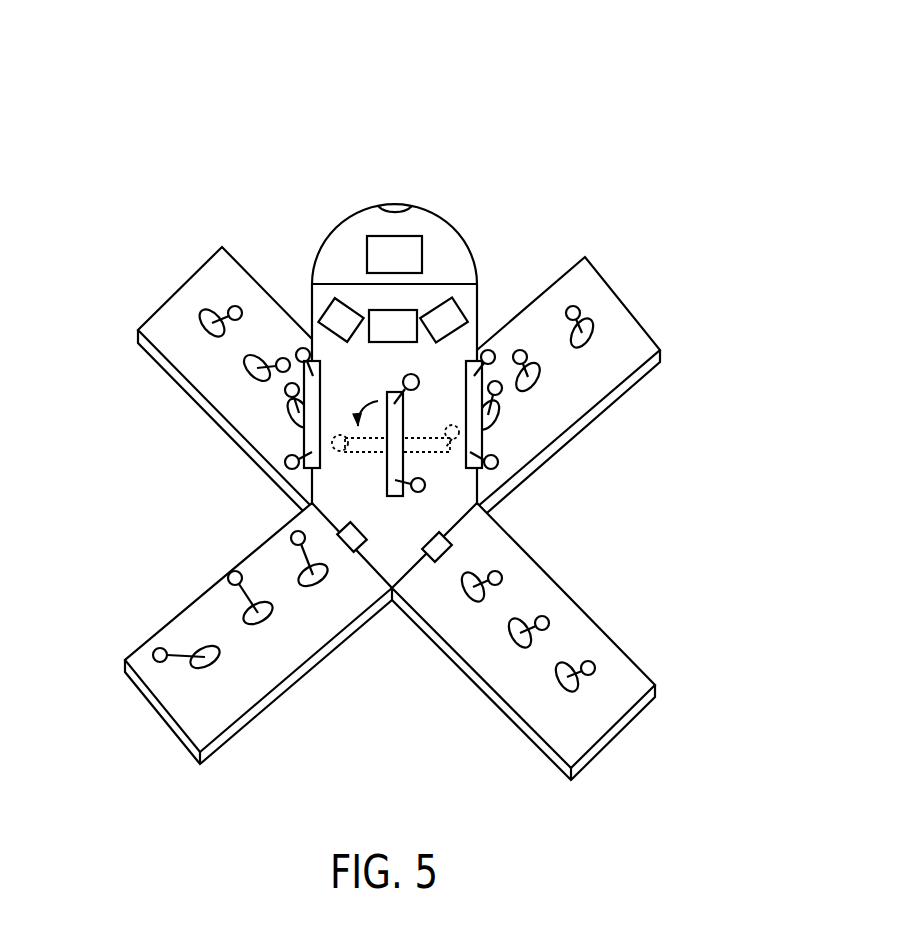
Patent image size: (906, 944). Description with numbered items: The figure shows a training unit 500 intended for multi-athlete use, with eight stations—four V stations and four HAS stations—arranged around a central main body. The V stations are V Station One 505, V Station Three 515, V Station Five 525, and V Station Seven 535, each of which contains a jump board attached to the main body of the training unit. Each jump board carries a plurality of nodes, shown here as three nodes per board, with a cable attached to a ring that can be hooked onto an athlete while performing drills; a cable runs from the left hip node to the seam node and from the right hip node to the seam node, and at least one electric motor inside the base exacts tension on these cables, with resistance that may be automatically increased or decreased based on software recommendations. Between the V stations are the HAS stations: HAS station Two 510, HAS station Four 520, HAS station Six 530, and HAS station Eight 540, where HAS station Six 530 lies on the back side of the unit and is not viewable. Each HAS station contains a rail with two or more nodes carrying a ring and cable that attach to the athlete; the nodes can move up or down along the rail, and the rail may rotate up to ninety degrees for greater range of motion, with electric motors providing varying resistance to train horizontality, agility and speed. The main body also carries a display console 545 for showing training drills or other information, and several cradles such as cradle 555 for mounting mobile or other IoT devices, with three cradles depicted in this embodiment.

The training unit 500 is at (223, 161).
The V Station 1 505 is at (156, 714).
The HAS station 2 510 is at (392, 512).
The V Station 3 515 is at (638, 719).
The HAS station 4 520 is at (491, 481).
The V Station 5 525 is at (668, 339).
The HAS station 6 530 is at (491, 282).
The V Station 7 535 is at (149, 300).
The HAS station 8 540 is at (299, 480).
The display console 545 is at (414, 237).
The cradle 555 is at (452, 298).